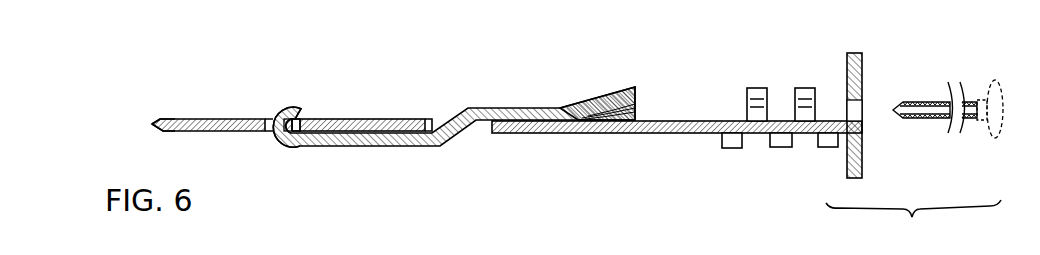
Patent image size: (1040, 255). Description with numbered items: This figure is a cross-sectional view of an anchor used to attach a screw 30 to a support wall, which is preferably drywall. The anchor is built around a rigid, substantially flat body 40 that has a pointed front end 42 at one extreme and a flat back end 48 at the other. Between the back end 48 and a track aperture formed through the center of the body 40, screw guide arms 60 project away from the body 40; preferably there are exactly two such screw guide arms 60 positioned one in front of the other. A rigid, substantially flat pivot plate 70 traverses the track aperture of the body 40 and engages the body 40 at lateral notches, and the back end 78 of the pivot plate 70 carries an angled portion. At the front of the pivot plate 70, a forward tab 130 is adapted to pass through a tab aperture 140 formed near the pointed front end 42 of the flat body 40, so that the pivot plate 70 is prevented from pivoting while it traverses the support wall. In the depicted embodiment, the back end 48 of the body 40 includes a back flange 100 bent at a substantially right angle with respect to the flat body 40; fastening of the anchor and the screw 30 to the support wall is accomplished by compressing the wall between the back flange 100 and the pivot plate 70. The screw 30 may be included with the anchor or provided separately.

The screw 30 is at (913, 92).
The flat body 40 is at (363, 120).
The pointed front end 42 is at (155, 123).
The flat back end 48 is at (855, 53).
The screw guide arm 60 is at (752, 89).
The pivot plate 70 is at (505, 108).
The back end 78 is at (640, 87).
The back flange 100 is at (862, 157).
The forward tab 130 is at (285, 107).
The tab aperture 140 is at (302, 121).